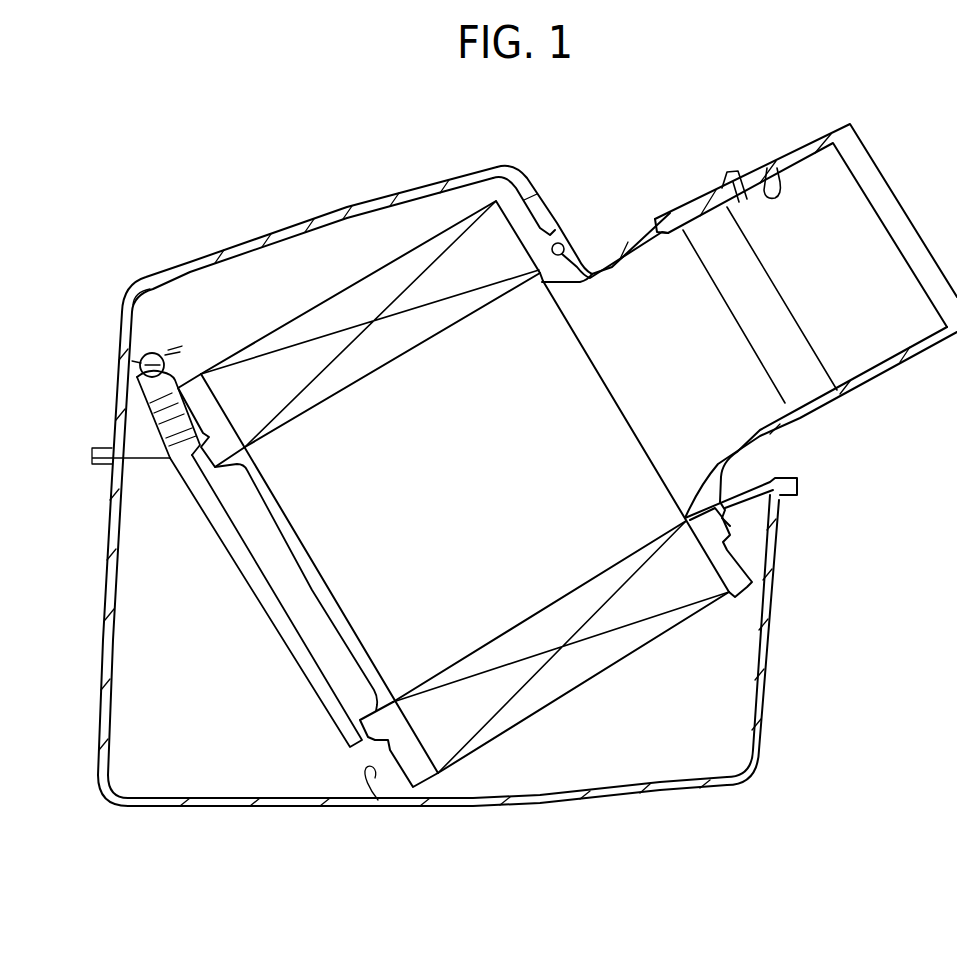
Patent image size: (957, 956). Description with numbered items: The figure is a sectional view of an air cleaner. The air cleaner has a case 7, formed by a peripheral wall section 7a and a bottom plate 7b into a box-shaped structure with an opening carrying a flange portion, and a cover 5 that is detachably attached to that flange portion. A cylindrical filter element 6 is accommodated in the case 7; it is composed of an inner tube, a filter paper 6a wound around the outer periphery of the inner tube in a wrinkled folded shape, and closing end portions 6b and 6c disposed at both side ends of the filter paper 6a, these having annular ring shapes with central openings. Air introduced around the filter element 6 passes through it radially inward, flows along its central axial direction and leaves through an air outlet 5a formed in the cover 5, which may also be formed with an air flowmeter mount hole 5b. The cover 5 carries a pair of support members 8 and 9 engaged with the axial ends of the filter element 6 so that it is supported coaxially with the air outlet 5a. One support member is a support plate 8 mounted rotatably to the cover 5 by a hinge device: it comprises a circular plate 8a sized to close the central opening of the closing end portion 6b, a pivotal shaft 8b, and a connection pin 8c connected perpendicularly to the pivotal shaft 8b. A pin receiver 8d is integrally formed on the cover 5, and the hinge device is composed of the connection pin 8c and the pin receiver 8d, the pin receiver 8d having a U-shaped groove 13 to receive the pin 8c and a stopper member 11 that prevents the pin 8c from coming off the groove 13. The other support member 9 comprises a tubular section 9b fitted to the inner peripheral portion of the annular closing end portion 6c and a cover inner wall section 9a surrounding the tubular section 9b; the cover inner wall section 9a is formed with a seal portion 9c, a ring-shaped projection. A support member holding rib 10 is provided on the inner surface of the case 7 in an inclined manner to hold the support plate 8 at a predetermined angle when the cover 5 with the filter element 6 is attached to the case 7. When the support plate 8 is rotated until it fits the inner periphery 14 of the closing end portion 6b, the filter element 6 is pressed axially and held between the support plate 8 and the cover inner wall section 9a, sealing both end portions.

The cover 5 is at (613, 260).
The air outlet 5a is at (771, 165).
The air flowmeter mount hole 5b is at (720, 182).
The filter element 6 is at (385, 287).
The filter paper 6a is at (605, 657).
The closing end portion 6b is at (435, 777).
The closing end portion 6c is at (741, 590).
The case 7 is at (542, 800).
The peripheral wall section 7a is at (768, 652).
The bottom plate 7b is at (652, 790).
The support plate 8 is at (255, 537).
The circular plate 8a is at (273, 573).
The pivotal shaft 8b is at (165, 420).
The connection pin 8c is at (120, 367).
The pin receiver 8d is at (153, 307).
The support member 9 is at (581, 188).
The cover inner wall section 9a is at (572, 232).
The tubular section 9b is at (588, 263).
The seal portion 9c is at (574, 268).
The support member holding rib 10 is at (375, 778).
The stopper member 11 is at (181, 351).
The U-shaped groove 13 is at (170, 352).
The inner periphery 14 is at (190, 466).